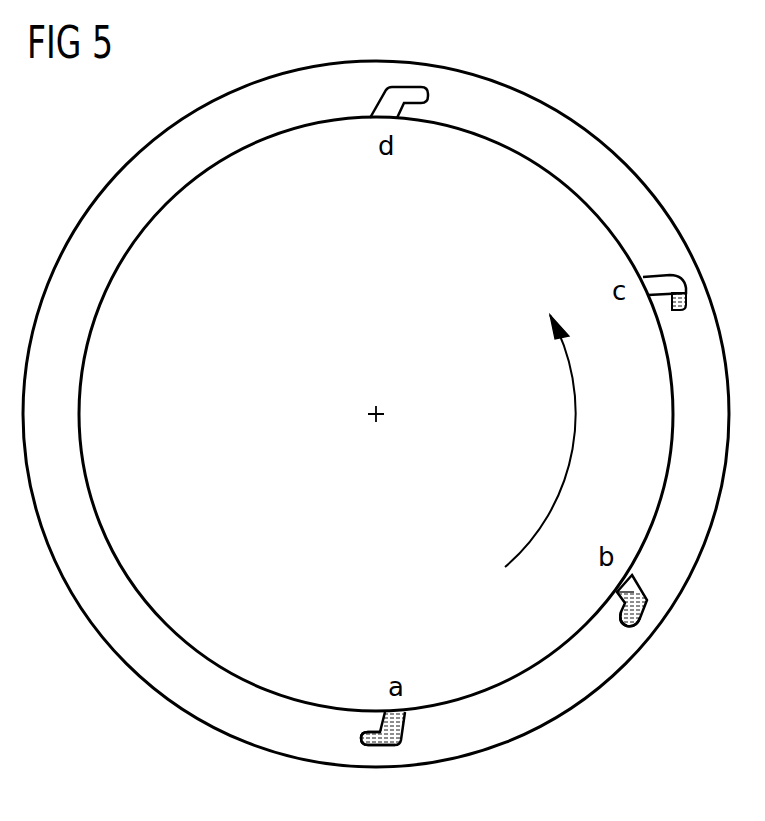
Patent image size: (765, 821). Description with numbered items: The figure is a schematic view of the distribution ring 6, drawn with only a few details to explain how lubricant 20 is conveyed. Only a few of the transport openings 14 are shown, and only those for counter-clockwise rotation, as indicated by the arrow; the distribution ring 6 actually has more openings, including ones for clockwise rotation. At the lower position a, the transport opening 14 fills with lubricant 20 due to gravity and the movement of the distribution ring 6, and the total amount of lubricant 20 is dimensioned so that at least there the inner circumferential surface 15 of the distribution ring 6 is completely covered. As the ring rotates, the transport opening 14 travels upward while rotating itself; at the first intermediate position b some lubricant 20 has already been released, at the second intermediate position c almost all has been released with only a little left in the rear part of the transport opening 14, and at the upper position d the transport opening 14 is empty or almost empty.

The distribution ring 6 is at (591, 150).
The inner circumferential surface 15 is at (494, 691).
The transport opening 14 is at (384, 96).
The lubricant 20 is at (684, 311).